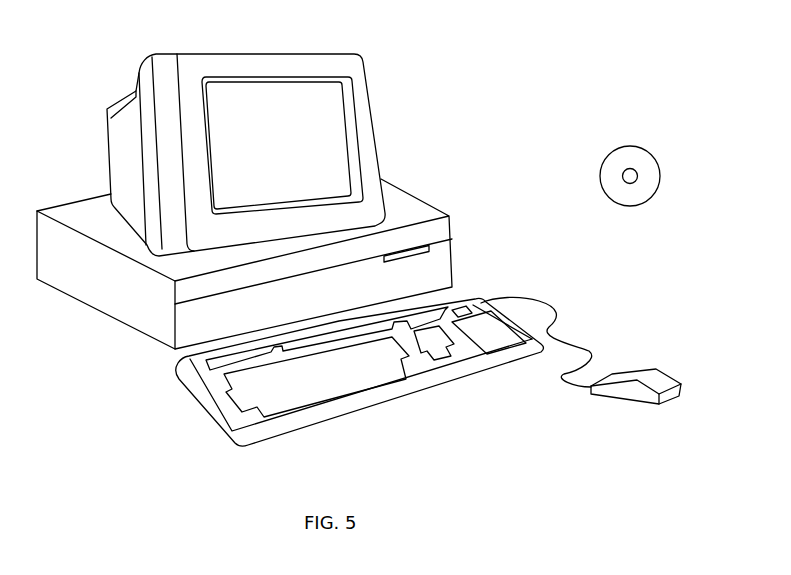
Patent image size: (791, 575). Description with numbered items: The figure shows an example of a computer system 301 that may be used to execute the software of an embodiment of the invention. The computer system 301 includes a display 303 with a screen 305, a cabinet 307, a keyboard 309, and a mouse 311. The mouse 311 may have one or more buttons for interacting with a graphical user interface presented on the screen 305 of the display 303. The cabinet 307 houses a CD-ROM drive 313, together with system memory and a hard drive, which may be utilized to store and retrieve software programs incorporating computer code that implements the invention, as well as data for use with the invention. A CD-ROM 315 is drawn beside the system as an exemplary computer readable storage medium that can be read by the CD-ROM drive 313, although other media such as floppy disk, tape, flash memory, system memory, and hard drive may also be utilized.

The computer system 301 is at (563, 35).
The display 303 is at (380, 158).
The screen 305 is at (343, 110).
The cabinet 307 is at (134, 333).
The keyboard 309 is at (367, 408).
The mouse 311 is at (675, 378).
The CD-ROM drive 313 is at (430, 246).
The CD-ROM 315 is at (645, 149).